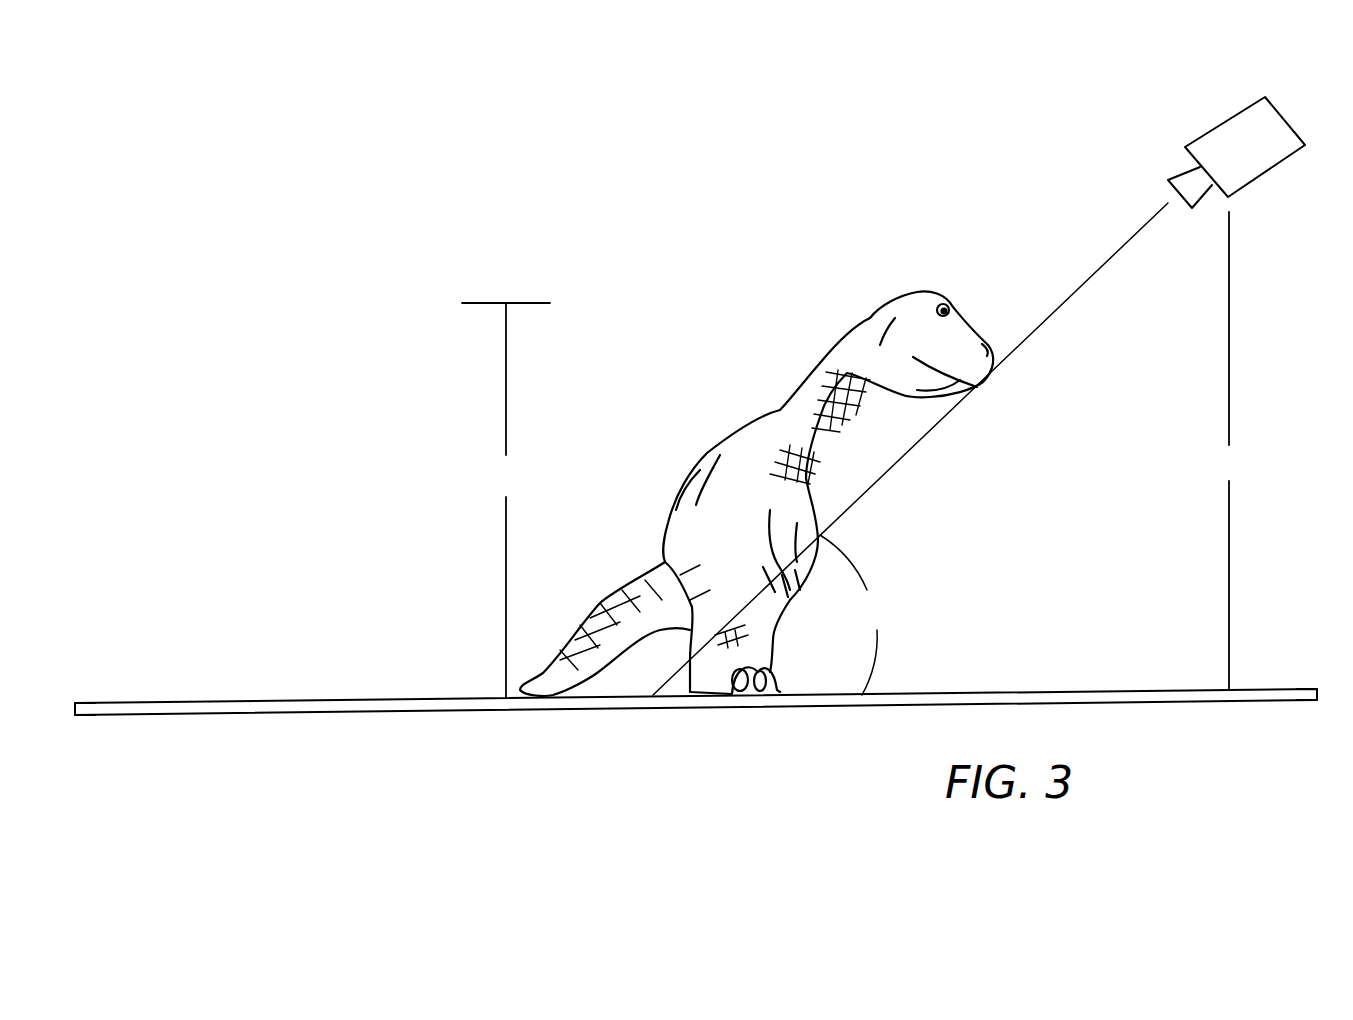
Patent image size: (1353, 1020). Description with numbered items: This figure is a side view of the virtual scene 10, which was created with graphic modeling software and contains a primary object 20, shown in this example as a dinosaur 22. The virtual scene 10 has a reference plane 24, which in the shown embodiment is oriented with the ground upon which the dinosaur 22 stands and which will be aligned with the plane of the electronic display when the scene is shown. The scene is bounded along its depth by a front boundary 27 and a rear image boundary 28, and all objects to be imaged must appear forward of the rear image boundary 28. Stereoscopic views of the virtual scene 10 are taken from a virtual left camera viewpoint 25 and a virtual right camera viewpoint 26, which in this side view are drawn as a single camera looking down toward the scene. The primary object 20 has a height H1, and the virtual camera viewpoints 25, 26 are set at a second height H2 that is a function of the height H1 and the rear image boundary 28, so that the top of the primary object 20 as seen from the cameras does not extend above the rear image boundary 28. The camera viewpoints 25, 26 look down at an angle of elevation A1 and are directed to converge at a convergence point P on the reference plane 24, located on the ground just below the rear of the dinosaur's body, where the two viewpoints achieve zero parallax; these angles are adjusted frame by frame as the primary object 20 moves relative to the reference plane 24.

The virtual scene 10 is at (756, 459).
The primary object 20 is at (756, 493).
The dinosaur 22 is at (818, 398).
The reference plane 24 is at (400, 693).
The virtual left camera viewpoint 25 is at (1207, 151).
The virtual right camera viewpoint 26 is at (1222, 122).
The front boundary 27 is at (1320, 694).
The rear image boundary 28 is at (70, 708).
The convergence point P is at (655, 697).
The angle of elevation A1 is at (854, 615).
The object height H1 is at (506, 500).
The second height H2 is at (1228, 451).